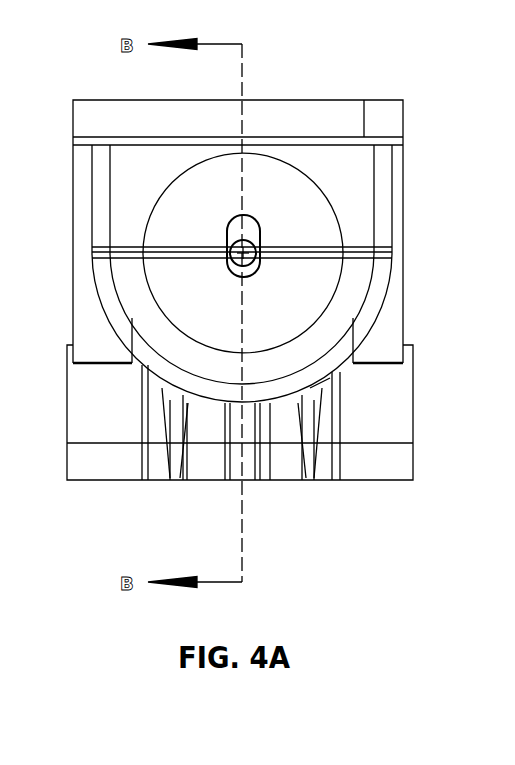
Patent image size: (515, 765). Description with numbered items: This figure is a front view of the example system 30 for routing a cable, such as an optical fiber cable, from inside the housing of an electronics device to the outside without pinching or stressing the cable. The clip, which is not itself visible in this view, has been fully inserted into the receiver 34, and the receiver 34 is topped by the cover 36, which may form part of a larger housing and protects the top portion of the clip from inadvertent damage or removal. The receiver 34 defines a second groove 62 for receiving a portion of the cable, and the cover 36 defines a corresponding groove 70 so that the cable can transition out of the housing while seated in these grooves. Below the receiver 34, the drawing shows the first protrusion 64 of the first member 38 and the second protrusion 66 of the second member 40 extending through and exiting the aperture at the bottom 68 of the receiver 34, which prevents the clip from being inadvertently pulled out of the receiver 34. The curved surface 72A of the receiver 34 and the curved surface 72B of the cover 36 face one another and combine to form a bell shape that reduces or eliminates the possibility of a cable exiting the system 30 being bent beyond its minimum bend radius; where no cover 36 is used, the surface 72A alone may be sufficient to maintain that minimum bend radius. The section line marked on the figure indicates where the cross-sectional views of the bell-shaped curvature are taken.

The system 30 is at (414, 88).
The receiver 34 is at (360, 328).
The cover 36 is at (286, 100).
The first member 38 is at (172, 458).
The second member 40 is at (313, 456).
The second groove 62 is at (242, 258).
The first protrusion 64 is at (163, 392).
The second protrusion 66 is at (312, 390).
The bottom 68 is at (270, 392).
The groove 70 is at (232, 222).
The surface 72A is at (306, 306).
The surface 72B is at (306, 207).